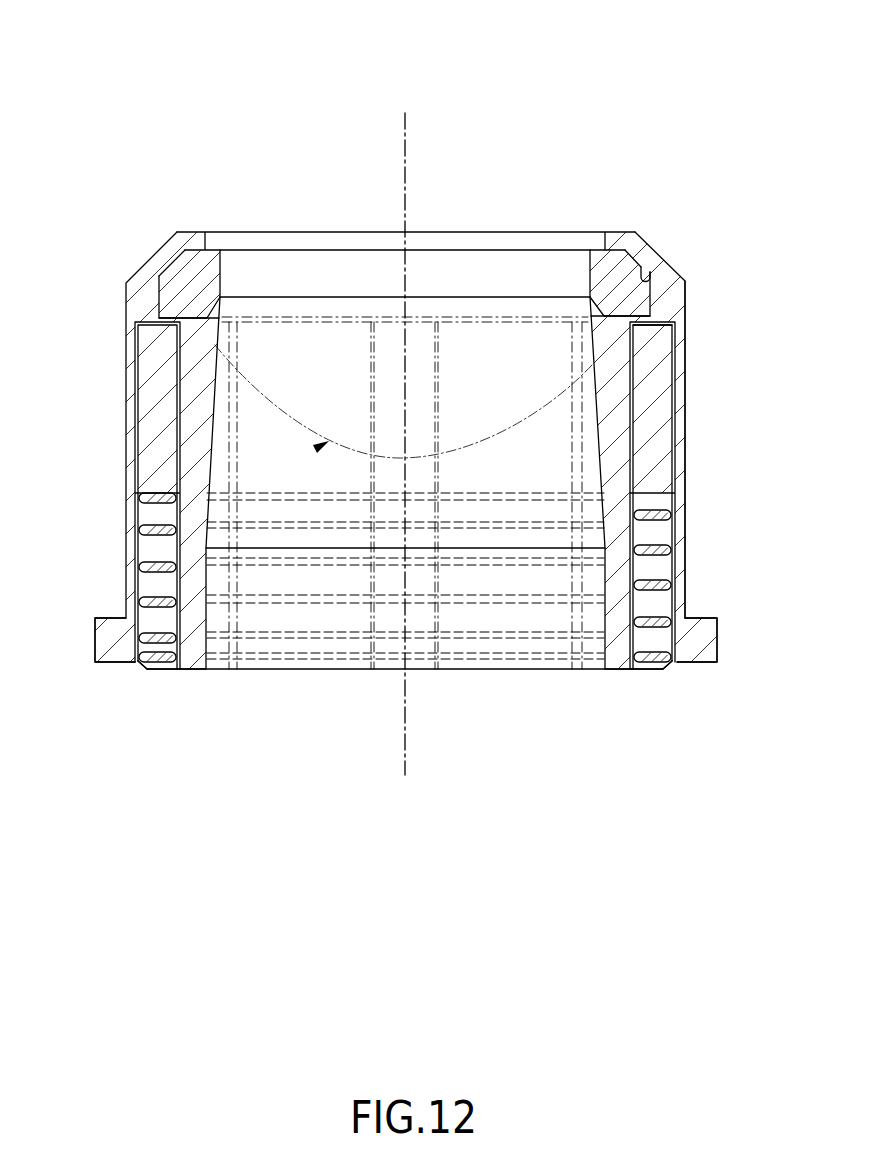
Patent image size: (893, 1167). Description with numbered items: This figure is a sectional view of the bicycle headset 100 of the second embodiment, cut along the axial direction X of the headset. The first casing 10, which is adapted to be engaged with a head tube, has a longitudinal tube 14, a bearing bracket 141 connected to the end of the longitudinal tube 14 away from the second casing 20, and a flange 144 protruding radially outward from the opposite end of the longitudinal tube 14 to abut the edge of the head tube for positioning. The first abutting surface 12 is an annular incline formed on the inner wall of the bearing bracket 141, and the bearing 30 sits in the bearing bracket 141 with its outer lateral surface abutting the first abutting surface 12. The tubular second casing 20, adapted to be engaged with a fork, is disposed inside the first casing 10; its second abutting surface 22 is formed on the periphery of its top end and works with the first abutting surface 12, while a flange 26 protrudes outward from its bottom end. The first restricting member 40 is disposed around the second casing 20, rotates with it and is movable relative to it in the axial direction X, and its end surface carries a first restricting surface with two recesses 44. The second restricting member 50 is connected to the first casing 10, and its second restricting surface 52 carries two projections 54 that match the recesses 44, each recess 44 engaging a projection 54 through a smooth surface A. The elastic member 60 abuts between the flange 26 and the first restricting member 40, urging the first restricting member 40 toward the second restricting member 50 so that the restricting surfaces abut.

The bicycle headset 100 is at (190, 136).
The axial direction X is at (405, 133).
The first casing 10 is at (690, 567).
The first abutting surface 12 is at (652, 276).
The longitudinal tube 14 is at (686, 484).
The bearing bracket 141 is at (638, 257).
The flange 144 is at (717, 640).
The second casing 20 is at (604, 683).
The second abutting surface 22 is at (591, 296).
The flange 26 is at (648, 664).
The bearing 30 is at (190, 287).
The first restricting member 40 is at (680, 423).
The recess 44 is at (425, 457).
The second restricting member 50 is at (664, 298).
The second restricting surface 52 is at (668, 334).
The projection 54 is at (390, 458).
The elastic member 60 is at (667, 630).
The smooth surface A is at (322, 444).